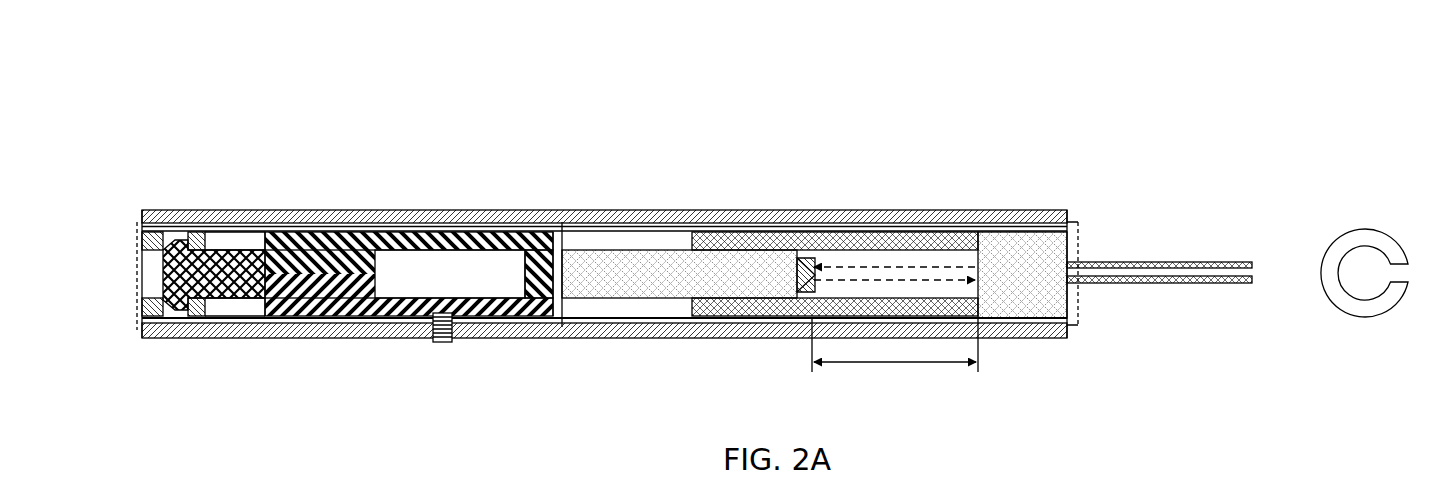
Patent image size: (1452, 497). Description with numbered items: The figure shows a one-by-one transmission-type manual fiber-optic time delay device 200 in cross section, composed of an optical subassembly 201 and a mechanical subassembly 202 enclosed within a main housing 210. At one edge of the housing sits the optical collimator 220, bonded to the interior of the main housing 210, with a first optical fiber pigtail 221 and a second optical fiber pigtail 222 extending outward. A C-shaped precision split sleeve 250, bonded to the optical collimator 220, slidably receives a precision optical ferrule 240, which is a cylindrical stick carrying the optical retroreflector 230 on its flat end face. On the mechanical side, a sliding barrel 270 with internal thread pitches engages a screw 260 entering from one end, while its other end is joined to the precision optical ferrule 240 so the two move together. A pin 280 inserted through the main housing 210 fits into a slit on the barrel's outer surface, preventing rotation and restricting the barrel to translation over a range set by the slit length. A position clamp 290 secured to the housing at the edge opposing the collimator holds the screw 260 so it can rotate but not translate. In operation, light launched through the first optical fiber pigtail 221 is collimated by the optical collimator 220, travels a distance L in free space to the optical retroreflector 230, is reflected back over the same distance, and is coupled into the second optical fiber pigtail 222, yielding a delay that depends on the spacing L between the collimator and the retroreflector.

The 1×1 transmission-type manual fiber-optic time delay device 200 is at (1354, 93).
The optical subassembly 201 is at (1083, 241).
The mechanical subassembly 202 is at (134, 246).
The main housing 210 is at (779, 214).
The optical collimator 220 is at (1056, 292).
The first optical fiber pigtail 221 is at (1156, 267).
The second optical fiber pigtail 222 is at (1156, 284).
The optical retroreflector 230 is at (805, 296).
The precision optical ferrule 240 is at (602, 272).
The precision split sleeve 250 is at (745, 308).
The screw 260 is at (232, 268).
The sliding barrel 270 is at (414, 242).
The pin 280 is at (445, 344).
The position clamp 290 is at (198, 240).